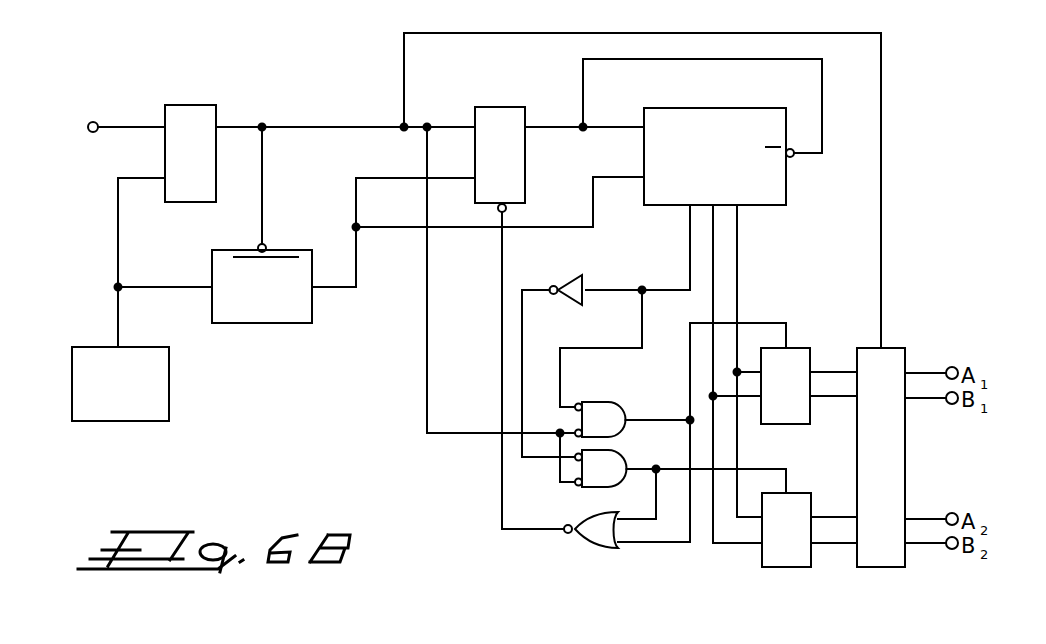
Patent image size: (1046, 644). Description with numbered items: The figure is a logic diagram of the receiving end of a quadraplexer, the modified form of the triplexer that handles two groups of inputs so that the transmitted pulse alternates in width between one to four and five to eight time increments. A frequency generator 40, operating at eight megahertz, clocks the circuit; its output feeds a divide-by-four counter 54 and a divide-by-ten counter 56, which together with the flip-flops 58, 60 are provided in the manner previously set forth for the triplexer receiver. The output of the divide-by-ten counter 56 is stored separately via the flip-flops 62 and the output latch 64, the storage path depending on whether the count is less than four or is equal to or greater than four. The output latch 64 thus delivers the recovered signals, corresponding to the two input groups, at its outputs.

The frequency generator 40 is at (112, 421).
The divide-by-four counter 54 is at (262, 272).
The divide-by-ten counter 56 is at (719, 143).
The flip-flop 58 is at (190, 140).
The flip-flop 60 is at (500, 145).
The flip-flops 62 is at (795, 353).
The output latch 64 is at (881, 475).